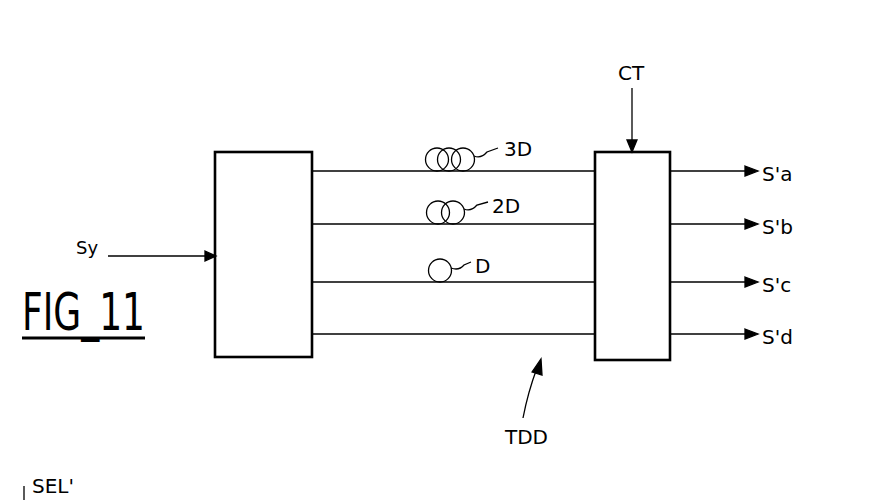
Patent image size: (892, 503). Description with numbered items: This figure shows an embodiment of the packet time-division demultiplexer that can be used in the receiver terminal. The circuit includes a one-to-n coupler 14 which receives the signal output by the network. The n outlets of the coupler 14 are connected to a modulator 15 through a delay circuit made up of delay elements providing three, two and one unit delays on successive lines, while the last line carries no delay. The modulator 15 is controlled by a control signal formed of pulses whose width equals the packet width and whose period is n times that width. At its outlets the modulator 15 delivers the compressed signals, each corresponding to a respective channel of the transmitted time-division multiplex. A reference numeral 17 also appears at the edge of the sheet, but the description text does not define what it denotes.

The 1-to-n coupler 14 is at (265, 152).
The modulator 15 is at (633, 362).
The selector 17 is at (372, 492).